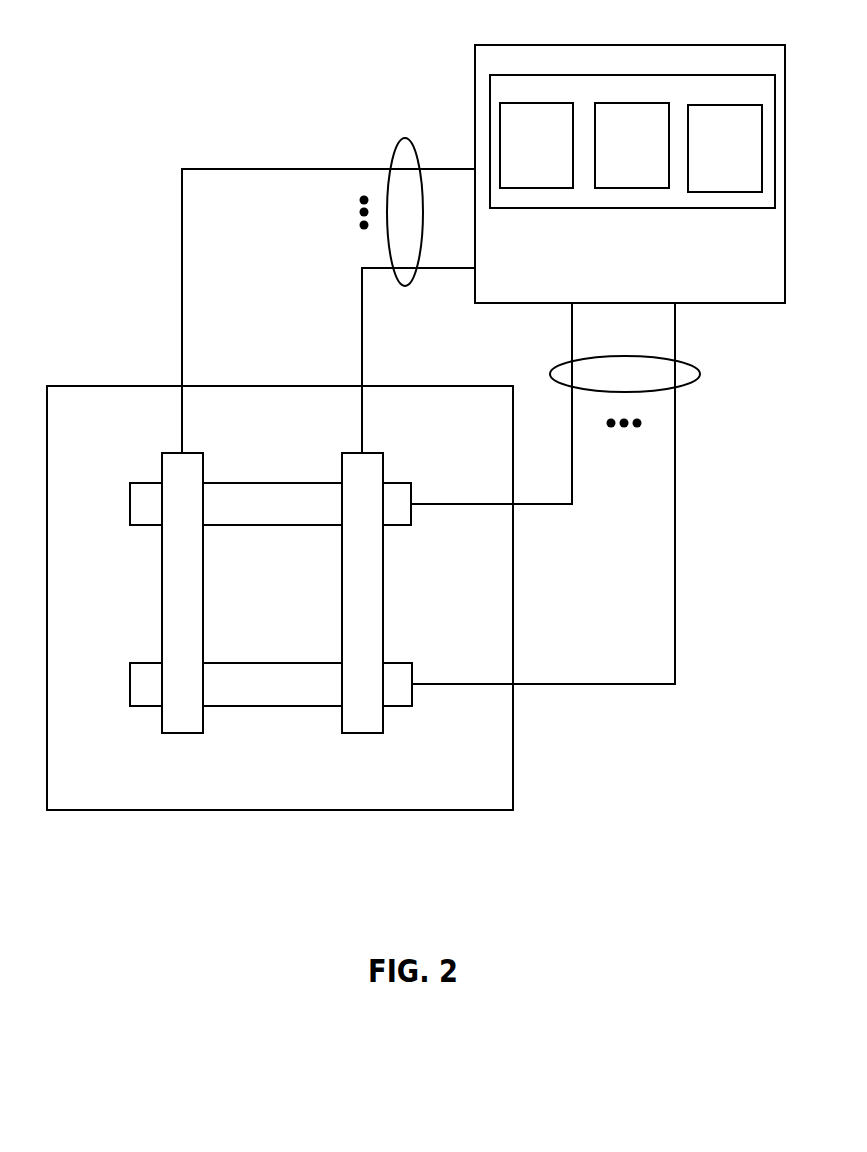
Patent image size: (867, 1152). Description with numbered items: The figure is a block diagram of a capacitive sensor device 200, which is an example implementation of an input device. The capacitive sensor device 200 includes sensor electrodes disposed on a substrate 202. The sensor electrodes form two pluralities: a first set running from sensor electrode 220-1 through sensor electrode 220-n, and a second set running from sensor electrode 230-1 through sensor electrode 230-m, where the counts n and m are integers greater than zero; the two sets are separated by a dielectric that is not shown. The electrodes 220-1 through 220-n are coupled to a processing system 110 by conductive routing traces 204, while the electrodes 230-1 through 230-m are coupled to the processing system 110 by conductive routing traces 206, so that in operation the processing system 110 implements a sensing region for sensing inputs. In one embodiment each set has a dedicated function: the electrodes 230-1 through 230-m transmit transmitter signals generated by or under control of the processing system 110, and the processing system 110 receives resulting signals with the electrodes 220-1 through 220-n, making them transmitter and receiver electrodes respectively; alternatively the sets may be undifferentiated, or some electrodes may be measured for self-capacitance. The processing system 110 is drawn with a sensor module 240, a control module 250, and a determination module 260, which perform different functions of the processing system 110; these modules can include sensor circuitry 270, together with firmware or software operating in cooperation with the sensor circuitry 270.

The capacitive sensor device 200 is at (153, 90).
The substrate 202 is at (52, 385).
The conductive routing traces 204 is at (402, 140).
The conductive routing traces 206 is at (701, 373).
The processing system 110 is at (617, 271).
The sensor circuitry 270 is at (490, 87).
The sensor module 240 is at (522, 156).
The control module 250 is at (647, 156).
The determination module 260 is at (710, 158).
The sensor electrode 220-1 is at (205, 463).
The sensor electrode 220-n is at (426, 451).
The sensor electrode 230-1 is at (400, 525).
The sensor electrode 230-m is at (259, 662).